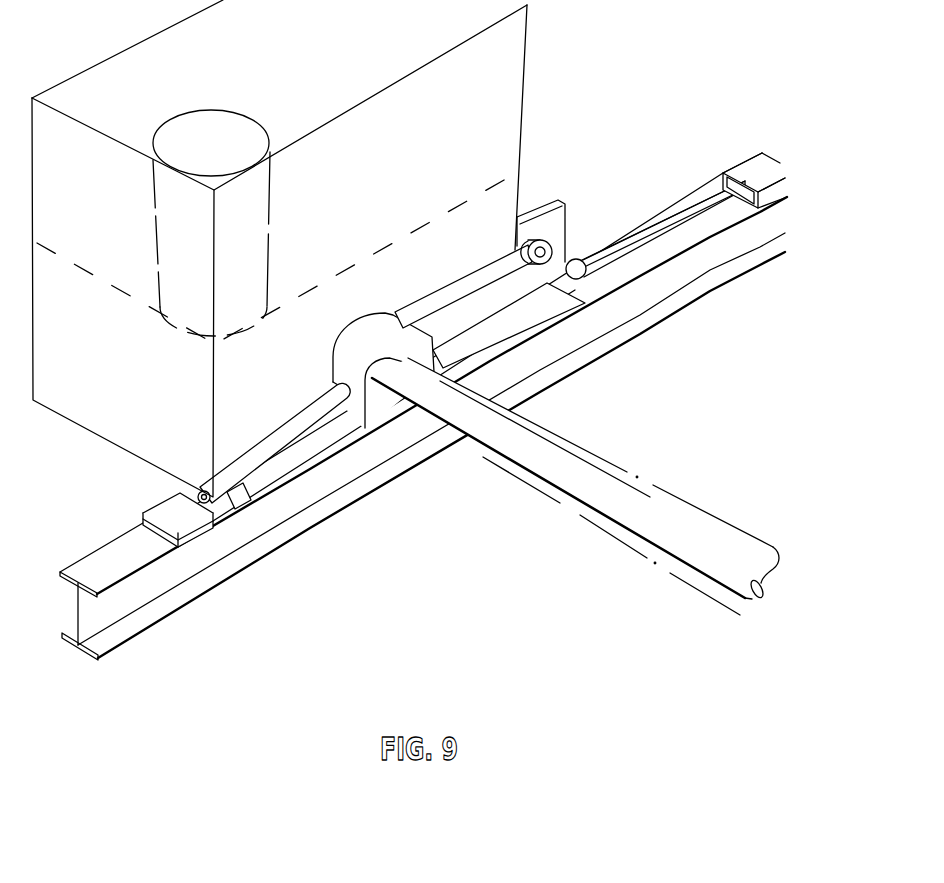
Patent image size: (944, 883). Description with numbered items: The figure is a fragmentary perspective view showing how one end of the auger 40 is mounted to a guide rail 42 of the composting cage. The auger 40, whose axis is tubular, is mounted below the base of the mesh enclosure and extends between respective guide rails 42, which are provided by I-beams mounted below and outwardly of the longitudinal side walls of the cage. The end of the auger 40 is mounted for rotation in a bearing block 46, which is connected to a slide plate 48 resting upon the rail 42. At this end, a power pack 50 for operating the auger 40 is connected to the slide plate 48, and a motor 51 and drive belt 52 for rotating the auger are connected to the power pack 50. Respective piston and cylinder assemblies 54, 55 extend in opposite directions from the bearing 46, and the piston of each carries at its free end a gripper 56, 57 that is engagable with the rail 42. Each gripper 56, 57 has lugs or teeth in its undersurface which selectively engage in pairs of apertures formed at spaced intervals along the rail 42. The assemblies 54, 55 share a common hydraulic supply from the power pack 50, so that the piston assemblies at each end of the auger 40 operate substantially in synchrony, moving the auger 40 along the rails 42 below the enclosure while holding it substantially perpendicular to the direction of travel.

The auger 40 is at (637, 512).
The guide rail 42 is at (123, 595).
The bearing block 46 is at (362, 350).
The slide plate 48 is at (527, 323).
The power pack 50 is at (313, 62).
The motor 51 is at (527, 203).
The drive belt 52 is at (455, 283).
The piston and cylinder assembly 54 is at (573, 263).
The piston and cylinder assembly 55 is at (290, 433).
The gripper 56 is at (742, 173).
The gripper 57 is at (167, 512).